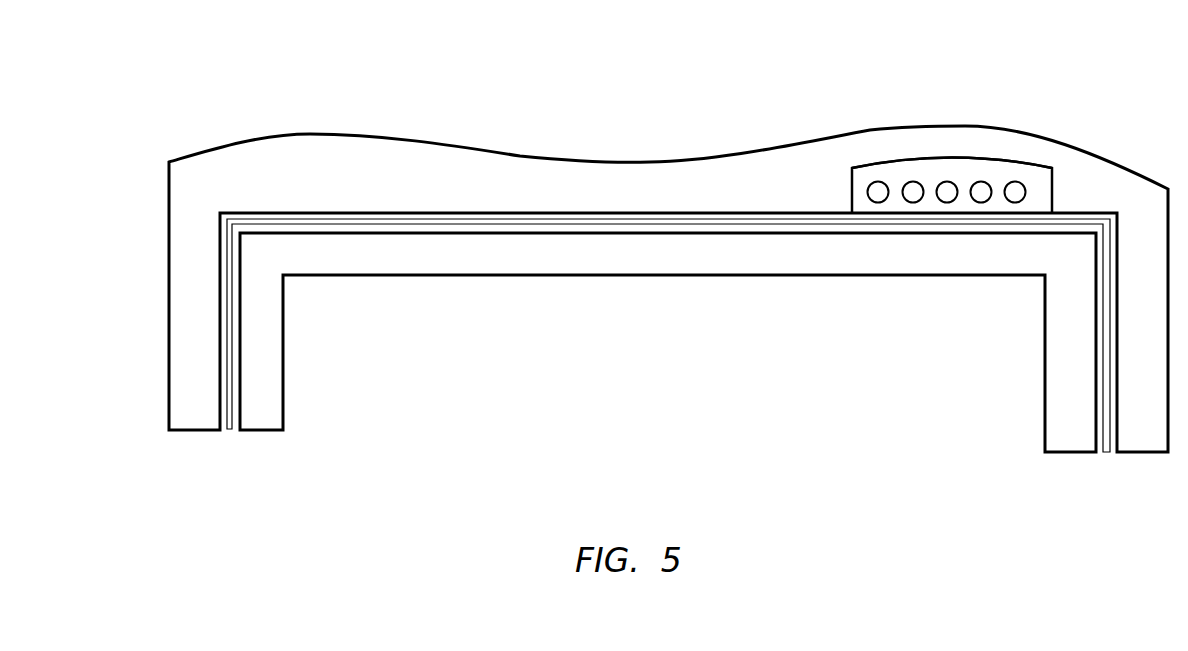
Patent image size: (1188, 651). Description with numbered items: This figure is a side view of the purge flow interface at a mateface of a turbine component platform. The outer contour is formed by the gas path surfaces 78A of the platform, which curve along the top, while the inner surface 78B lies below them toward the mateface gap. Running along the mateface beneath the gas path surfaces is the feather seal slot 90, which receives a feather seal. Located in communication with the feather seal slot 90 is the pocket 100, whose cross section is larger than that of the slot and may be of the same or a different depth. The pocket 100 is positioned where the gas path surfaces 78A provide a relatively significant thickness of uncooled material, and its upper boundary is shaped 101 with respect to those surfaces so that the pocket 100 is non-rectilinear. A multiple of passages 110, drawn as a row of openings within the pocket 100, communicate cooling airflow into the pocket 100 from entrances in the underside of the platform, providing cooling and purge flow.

The gas path surfaces 78A is at (882, 128).
The inner surface 78B is at (808, 277).
The feather seal slot 90 is at (675, 226).
The pocket 100 is at (993, 201).
The shaped 101 is at (1010, 157).
The passages 110 is at (947, 203).